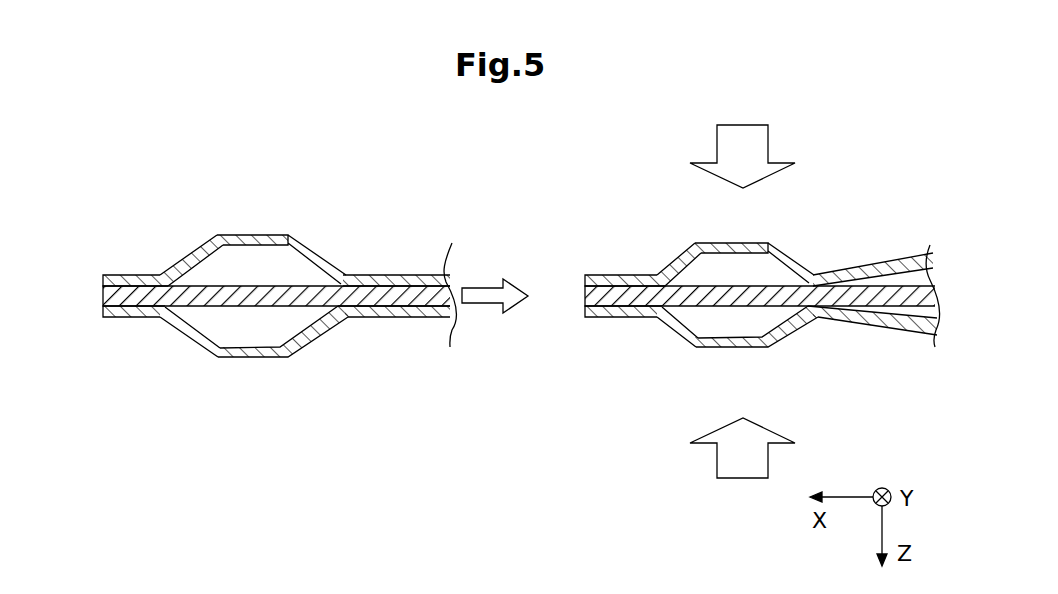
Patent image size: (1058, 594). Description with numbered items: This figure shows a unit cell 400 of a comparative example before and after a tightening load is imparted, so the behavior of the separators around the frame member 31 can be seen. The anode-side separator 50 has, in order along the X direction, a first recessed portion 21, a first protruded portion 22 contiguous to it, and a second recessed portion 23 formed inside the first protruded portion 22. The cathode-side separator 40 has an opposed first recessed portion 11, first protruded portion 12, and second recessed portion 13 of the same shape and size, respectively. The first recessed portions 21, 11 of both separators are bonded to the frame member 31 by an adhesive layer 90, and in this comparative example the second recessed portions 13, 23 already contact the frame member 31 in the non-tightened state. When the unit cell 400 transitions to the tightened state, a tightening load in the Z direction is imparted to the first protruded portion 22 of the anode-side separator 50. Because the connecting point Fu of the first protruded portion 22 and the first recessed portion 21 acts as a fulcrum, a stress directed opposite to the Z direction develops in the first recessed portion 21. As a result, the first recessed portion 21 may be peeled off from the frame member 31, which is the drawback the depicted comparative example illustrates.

The unit cell 400 is at (499, 269).
The frame member 31 is at (103, 295).
The anode-side separator 50 is at (103, 279).
The cathode-side separator 40 is at (103, 314).
The second recessed portion 23 is at (128, 277).
The first protruded portion 22 is at (240, 235).
The first recessed portion 21 is at (372, 276).
The second recessed portion 13 is at (138, 318).
The first protruded portion 12 is at (246, 358).
The first recessed portion 11 is at (372, 318).
The adhesive layer 90 is at (445, 307).
The connecting point Fu is at (808, 272).